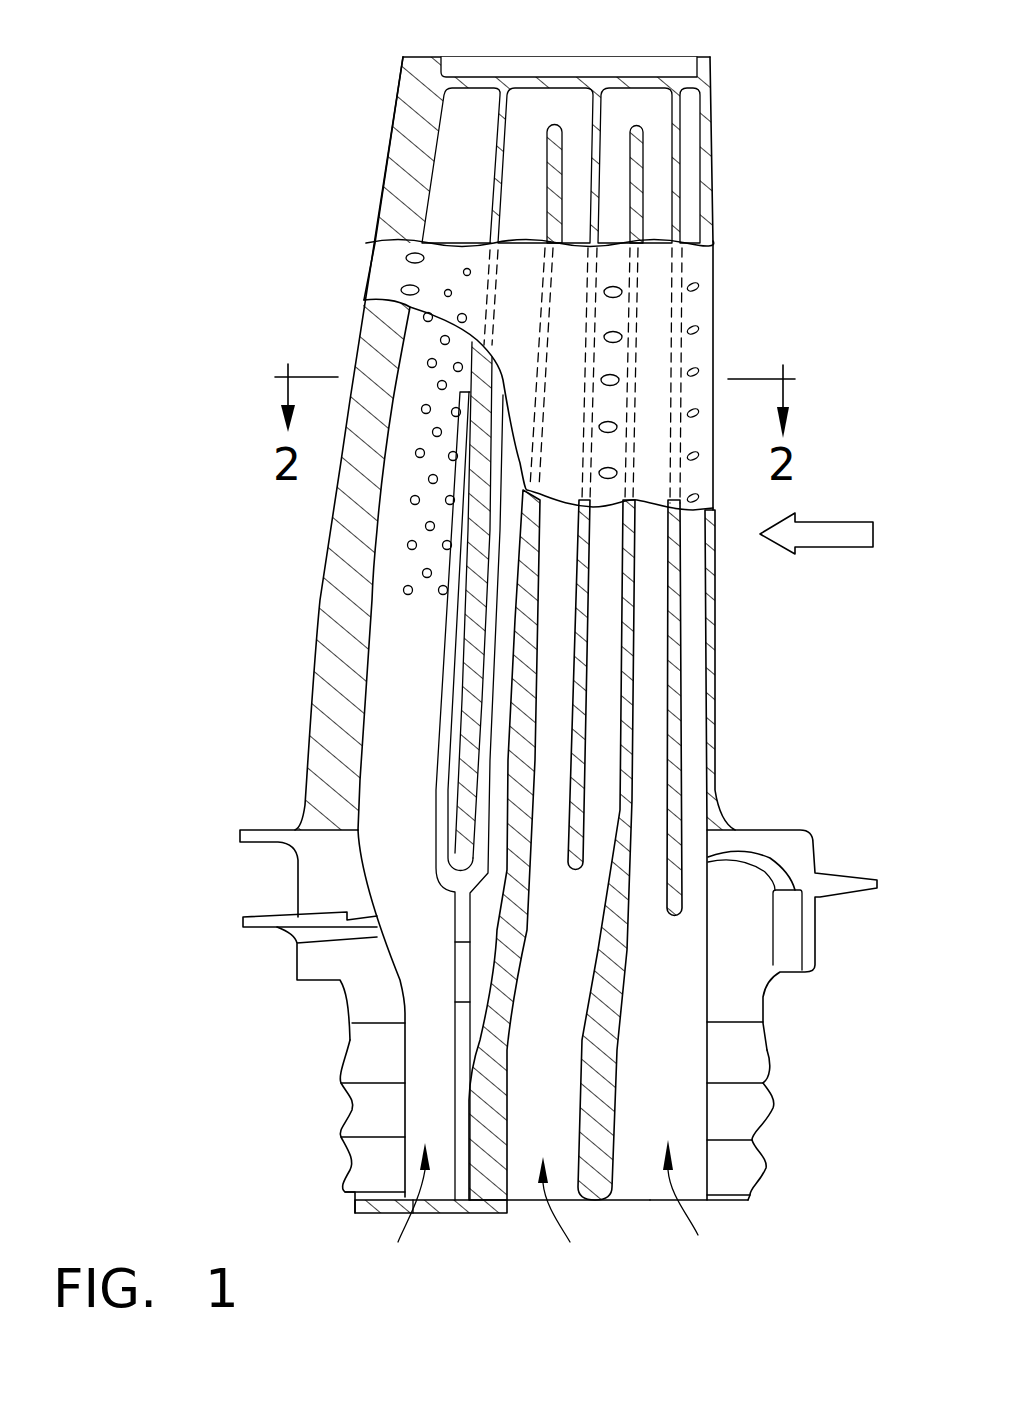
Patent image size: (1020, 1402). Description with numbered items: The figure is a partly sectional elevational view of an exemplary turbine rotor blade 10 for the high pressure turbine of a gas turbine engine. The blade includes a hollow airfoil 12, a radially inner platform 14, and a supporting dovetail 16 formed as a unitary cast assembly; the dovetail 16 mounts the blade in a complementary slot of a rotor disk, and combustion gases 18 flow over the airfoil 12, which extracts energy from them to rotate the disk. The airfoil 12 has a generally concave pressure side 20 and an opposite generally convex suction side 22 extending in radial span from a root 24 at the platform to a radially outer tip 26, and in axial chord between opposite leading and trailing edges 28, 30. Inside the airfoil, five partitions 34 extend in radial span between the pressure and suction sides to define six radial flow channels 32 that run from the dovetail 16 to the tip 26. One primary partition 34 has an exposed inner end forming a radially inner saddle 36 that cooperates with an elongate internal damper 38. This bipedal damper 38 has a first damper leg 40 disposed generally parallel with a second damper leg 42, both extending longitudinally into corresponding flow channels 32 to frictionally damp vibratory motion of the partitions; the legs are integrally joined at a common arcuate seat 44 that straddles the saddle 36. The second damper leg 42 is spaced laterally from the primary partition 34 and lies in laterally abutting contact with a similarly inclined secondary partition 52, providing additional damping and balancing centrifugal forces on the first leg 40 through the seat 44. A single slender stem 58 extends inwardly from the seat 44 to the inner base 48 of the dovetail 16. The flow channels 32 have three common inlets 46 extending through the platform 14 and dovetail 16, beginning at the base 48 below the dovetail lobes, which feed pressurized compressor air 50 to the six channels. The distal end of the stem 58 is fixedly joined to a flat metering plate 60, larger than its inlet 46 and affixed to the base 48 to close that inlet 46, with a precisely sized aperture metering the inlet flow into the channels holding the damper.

The turbine rotor blade 10 is at (360, 72).
The airfoil 12 is at (725, 648).
The platform 14 is at (803, 829).
The dovetail 16 is at (777, 1047).
The combustion gases 18 is at (841, 522).
The pressure side 20 is at (501, 284).
The suction side 22 is at (471, 100).
The root 24 is at (300, 826).
The tip 26 is at (671, 57).
The leading edge 28 is at (718, 270).
The trailing edge 30 is at (368, 266).
The flow channels 32 is at (444, 194).
The partitions 34 is at (472, 685).
The saddle 36 is at (463, 861).
The internal damper 38 is at (446, 940).
The first damper leg 40 is at (492, 740).
The second damper leg 42 is at (431, 778).
The seat 44 is at (453, 887).
The inlets 46 is at (409, 1119).
The base 48 is at (618, 1203).
The compressor air 50 is at (689, 1233).
The secondary partition 52 is at (447, 546).
The stem 58 is at (404, 1040).
The metering plate 60 is at (462, 1216).